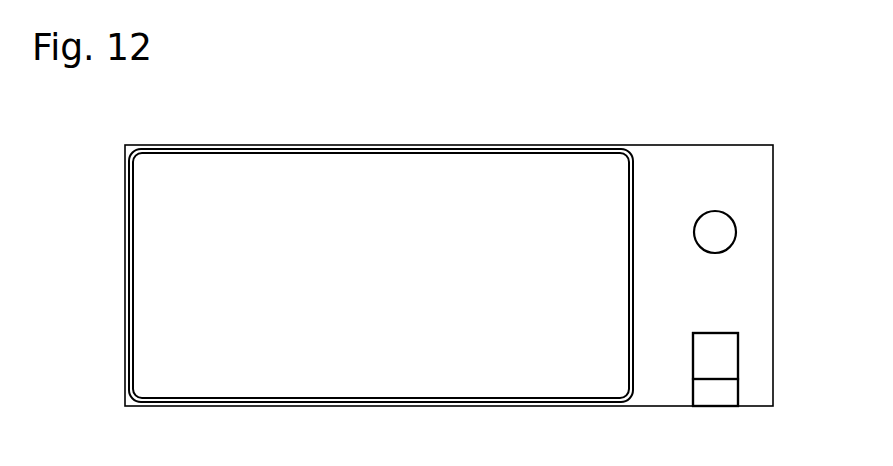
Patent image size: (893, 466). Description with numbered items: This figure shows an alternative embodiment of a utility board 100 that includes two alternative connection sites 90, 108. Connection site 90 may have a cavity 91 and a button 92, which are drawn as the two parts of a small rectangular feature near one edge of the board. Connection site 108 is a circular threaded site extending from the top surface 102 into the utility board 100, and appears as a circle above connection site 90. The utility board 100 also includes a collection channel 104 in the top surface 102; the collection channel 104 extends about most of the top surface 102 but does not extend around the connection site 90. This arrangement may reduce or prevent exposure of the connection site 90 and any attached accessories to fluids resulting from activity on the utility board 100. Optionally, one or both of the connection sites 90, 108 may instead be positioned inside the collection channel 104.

The utility board 100 is at (644, 110).
The top surface 102 is at (382, 286).
The collection channel 104 is at (297, 152).
The connection site 108 is at (725, 212).
The connection site 90 is at (740, 307).
The cavity 91 is at (723, 356).
The button 92 is at (717, 393).